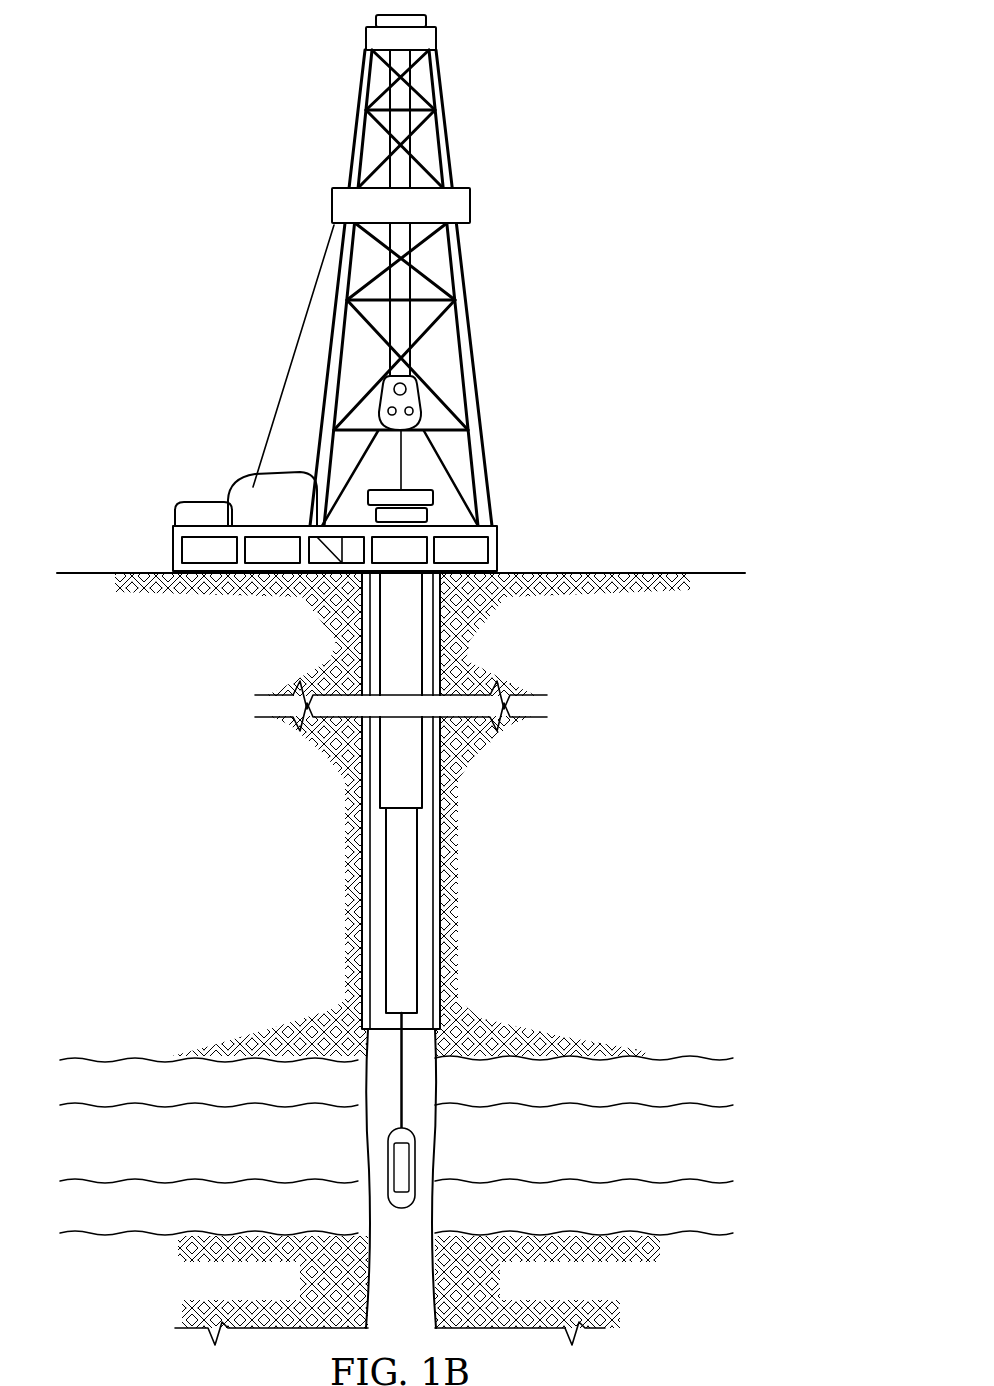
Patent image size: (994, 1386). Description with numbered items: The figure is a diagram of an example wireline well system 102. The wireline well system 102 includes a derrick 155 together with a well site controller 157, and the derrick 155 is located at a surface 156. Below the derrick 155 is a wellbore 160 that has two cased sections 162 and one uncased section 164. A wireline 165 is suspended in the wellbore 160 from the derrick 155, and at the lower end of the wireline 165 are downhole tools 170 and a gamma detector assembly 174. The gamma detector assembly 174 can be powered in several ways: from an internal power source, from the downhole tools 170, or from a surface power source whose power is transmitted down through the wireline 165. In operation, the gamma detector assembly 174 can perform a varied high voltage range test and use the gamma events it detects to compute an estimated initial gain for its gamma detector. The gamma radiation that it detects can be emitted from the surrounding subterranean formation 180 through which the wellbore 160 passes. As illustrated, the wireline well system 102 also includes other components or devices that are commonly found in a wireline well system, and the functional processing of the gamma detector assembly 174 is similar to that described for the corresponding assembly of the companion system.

The wireline well system 102 is at (238, 141).
The derrick 155 is at (467, 276).
The surface 156 is at (603, 573).
The well site controller 157 is at (312, 553).
The wellbore 160 is at (441, 862).
The cased sections 162 is at (424, 798).
The uncased section 164 is at (426, 1091).
The wireline 165 is at (400, 1070).
The downhole tools 170 is at (416, 1158).
The gamma detector assembly 174 is at (393, 1167).
The subterranean formation 180 is at (742, 1081).